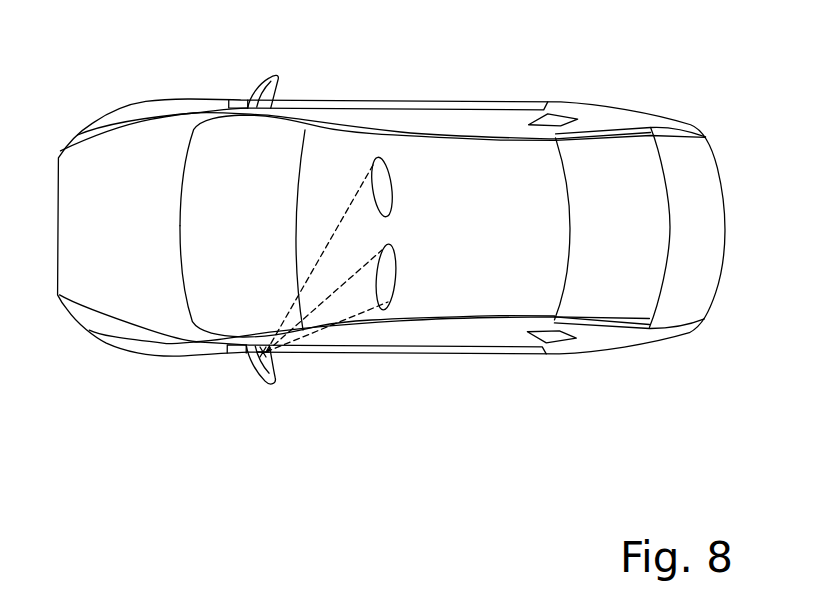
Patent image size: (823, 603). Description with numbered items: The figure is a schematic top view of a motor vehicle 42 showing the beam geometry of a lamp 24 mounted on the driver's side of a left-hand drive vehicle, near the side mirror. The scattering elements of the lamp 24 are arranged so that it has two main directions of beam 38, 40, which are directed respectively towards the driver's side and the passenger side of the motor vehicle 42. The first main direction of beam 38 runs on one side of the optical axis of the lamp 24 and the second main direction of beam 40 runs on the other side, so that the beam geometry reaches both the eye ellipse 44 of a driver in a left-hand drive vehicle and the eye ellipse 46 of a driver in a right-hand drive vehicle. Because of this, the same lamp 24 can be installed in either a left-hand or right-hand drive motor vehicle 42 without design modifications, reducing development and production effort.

The lamp 24 is at (262, 358).
The first main direction of beam 38 is at (335, 316).
The second main direction of beam 40 is at (342, 242).
The motor vehicle 42 is at (592, 340).
The eye ellipse 44 is at (377, 157).
The eye ellipse 46 is at (388, 300).